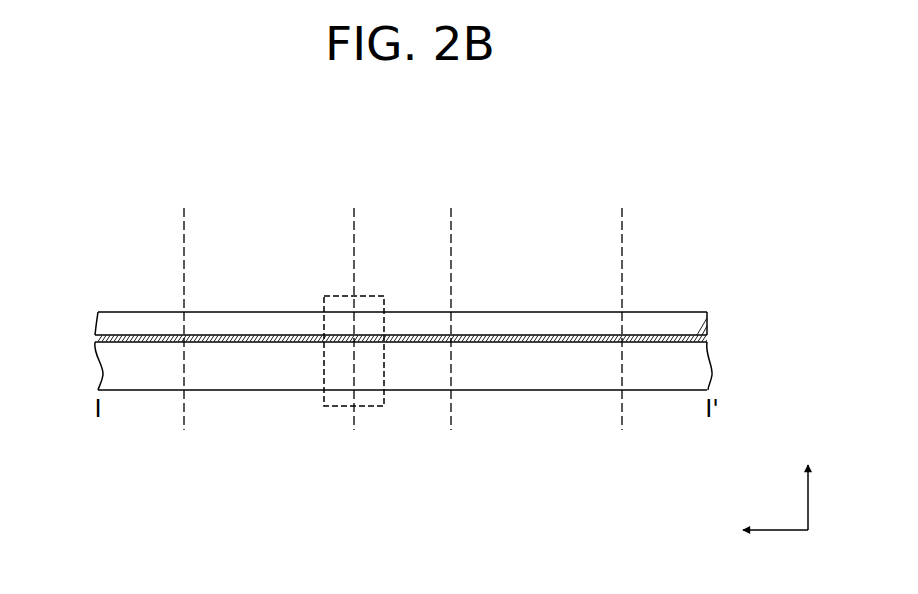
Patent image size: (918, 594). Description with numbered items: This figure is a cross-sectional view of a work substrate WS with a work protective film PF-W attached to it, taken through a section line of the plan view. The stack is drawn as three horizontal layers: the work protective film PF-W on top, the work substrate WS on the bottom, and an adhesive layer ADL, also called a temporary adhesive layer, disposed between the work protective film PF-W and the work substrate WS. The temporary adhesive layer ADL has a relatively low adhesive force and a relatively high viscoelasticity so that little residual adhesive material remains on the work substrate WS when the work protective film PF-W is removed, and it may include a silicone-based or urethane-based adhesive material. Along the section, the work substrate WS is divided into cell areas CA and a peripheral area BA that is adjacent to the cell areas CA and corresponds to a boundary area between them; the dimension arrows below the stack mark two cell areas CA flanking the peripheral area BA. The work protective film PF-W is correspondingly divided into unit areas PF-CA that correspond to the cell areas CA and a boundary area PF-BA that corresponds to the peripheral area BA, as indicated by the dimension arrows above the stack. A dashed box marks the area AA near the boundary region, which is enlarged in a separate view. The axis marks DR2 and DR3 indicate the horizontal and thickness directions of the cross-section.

The work protective film PF-W is at (705, 318).
The adhesive layer ADL is at (705, 340).
The work substrate WS is at (700, 370).
The area AA is at (372, 296).
The unit areas PF-CA is at (354, 213).
The boundary area PF-BA is at (354, 213).
The cell areas CA is at (354, 423).
The peripheral area BA is at (354, 423).
The second direction DR2 is at (753, 531).
The third direction DR3 is at (808, 485).